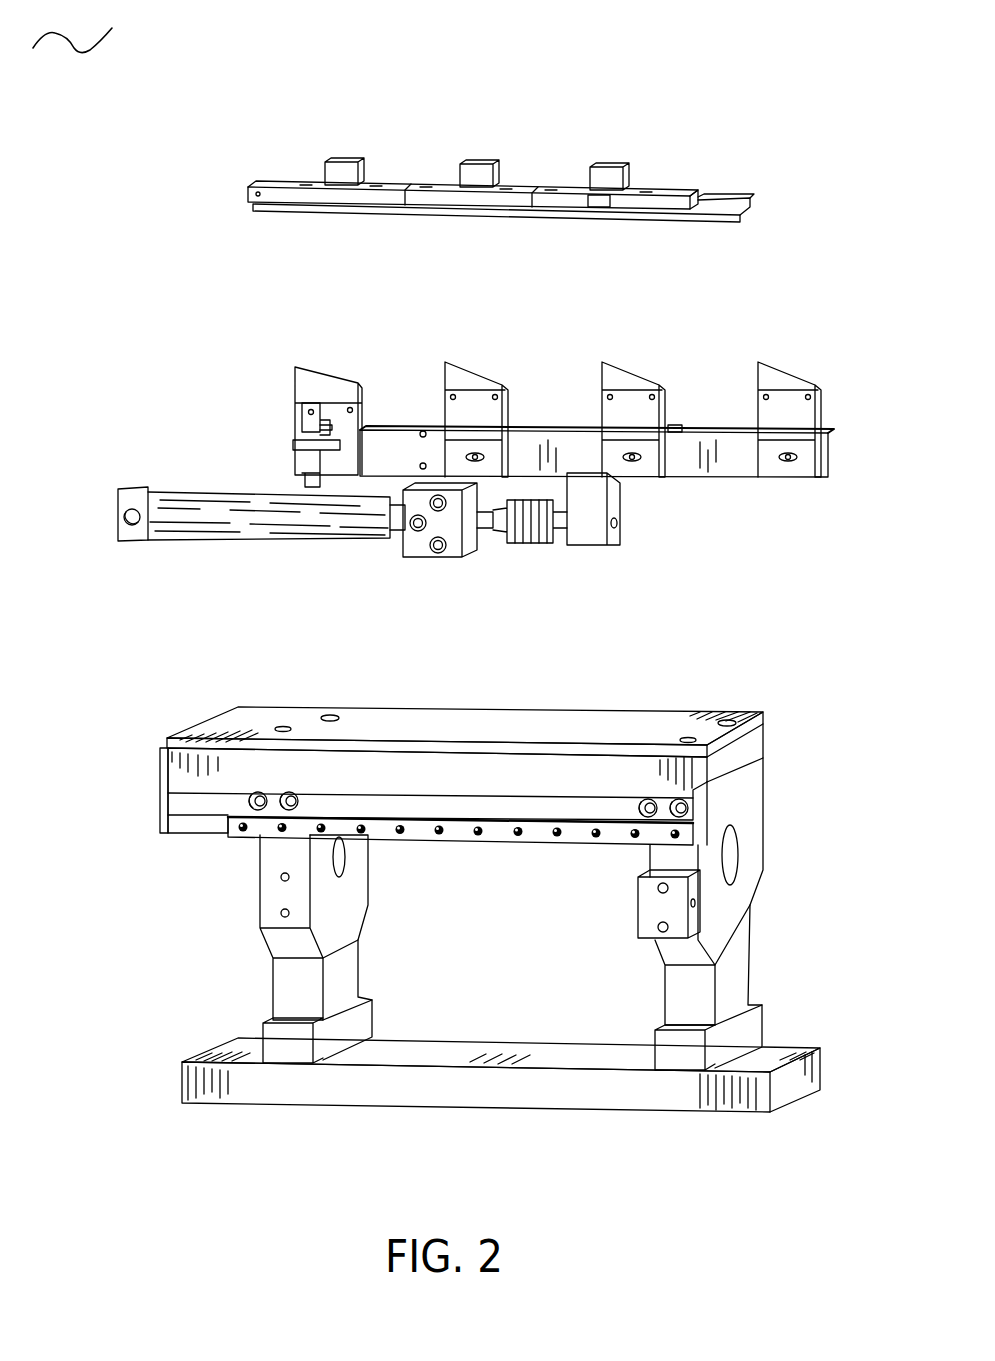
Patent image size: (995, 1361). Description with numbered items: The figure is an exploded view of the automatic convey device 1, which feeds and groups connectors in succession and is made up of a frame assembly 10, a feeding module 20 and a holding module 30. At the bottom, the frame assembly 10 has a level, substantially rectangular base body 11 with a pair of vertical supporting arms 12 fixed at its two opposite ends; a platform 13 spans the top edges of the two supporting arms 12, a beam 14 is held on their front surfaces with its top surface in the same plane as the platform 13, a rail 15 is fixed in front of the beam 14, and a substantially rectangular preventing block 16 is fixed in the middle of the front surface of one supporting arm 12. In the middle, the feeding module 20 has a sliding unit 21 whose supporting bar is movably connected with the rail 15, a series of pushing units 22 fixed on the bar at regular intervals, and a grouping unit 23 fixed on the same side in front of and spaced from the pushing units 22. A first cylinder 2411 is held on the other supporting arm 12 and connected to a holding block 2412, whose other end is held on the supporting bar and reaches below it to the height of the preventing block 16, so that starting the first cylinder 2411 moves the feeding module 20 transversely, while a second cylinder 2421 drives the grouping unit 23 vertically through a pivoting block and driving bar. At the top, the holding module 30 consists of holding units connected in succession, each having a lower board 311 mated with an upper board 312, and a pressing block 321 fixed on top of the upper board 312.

The automatic convey device 1 is at (72, 29).
The frame assembly 10 is at (454, 917).
The base body 11 is at (568, 1085).
The supporting arm 12 is at (750, 895).
The platform 13 is at (640, 727).
The beam 14 is at (170, 778).
The rail 15 is at (660, 832).
The preventing block 16 is at (668, 910).
The feeding module 20 is at (475, 475).
The sliding unit 21 is at (716, 459).
The pushing unit 22 is at (790, 404).
The grouping unit 23 is at (311, 382).
The first cylinder 2411 is at (225, 516).
The holding block 2412 is at (585, 530).
The second cylinder 2421 is at (297, 458).
The holding module 30 is at (413, 196).
The lower board 311 is at (652, 216).
The upper board 312 is at (661, 186).
The pressing block 321 is at (463, 169).